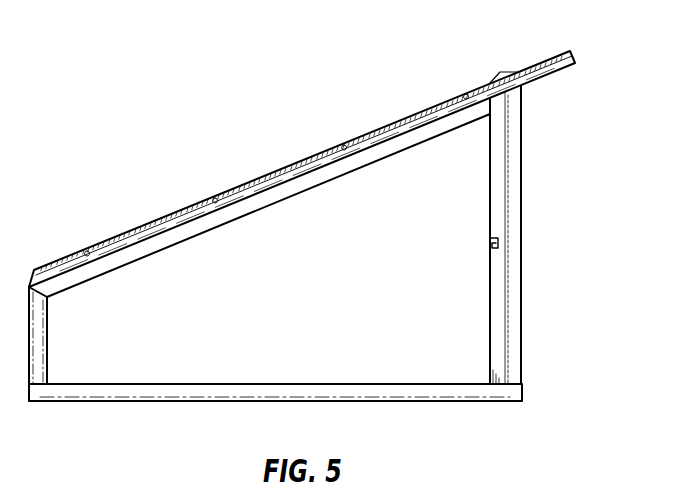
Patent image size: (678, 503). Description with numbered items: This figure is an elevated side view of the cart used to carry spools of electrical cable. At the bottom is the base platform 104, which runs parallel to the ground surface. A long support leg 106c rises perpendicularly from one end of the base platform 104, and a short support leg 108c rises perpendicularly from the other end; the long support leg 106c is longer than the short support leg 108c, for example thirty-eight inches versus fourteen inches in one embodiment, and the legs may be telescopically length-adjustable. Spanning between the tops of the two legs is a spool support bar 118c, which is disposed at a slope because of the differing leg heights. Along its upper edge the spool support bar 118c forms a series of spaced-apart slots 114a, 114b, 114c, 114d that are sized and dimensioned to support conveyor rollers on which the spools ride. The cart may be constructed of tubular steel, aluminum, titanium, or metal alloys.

The base platform 104 is at (276, 384).
The long support leg 106c is at (517, 224).
The short support leg 108c is at (42, 345).
The spool support bar 118c is at (570, 51).
The slot 114a is at (468, 92).
The slot 114b is at (345, 146).
The slot 114c is at (216, 199).
The slot 114d is at (88, 253).